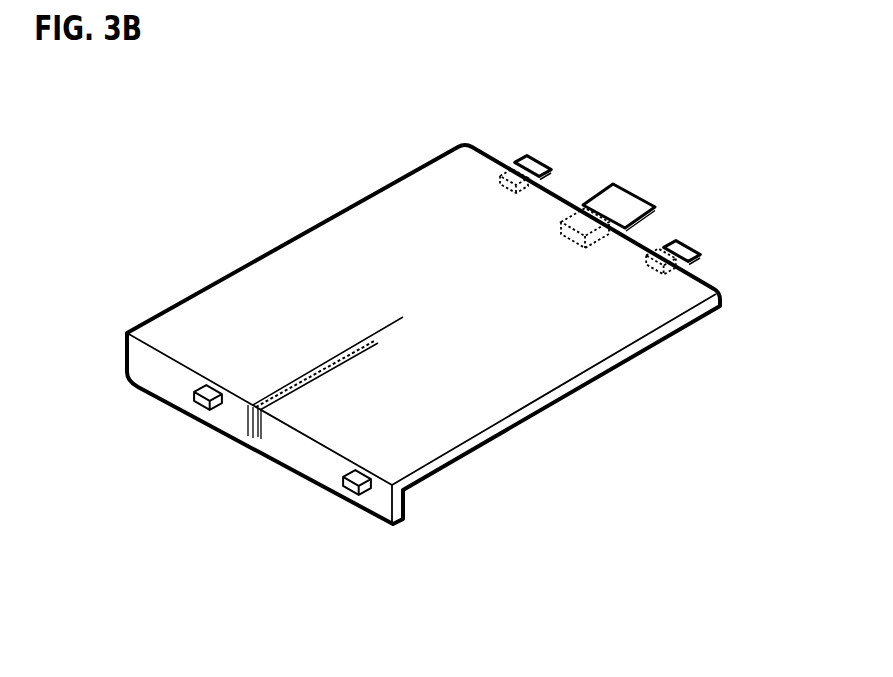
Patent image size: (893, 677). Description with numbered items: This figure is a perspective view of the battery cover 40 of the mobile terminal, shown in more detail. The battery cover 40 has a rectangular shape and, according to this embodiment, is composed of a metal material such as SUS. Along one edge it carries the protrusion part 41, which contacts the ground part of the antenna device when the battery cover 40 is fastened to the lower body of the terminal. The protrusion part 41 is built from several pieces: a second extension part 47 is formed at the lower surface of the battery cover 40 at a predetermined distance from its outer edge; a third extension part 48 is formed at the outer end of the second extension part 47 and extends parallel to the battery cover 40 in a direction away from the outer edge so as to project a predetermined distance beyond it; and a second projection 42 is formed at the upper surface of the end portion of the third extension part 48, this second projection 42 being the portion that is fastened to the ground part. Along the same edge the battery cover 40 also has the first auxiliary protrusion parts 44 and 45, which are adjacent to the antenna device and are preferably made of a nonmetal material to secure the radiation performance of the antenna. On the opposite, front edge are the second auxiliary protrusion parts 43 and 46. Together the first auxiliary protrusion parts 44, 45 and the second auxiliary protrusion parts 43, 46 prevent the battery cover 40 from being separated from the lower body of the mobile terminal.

The battery cover 40 is at (640, 459).
The protrusion part 41 is at (653, 158).
The second projection 42 is at (718, 112).
The second auxiliary protrusion part 43 is at (363, 548).
The first auxiliary protrusion part 44 is at (737, 212).
The first auxiliary protrusion part 45 is at (546, 163).
The second auxiliary protrusion part 46 is at (217, 464).
The second extension part 47 is at (597, 197).
The third extension part 48 is at (656, 127).